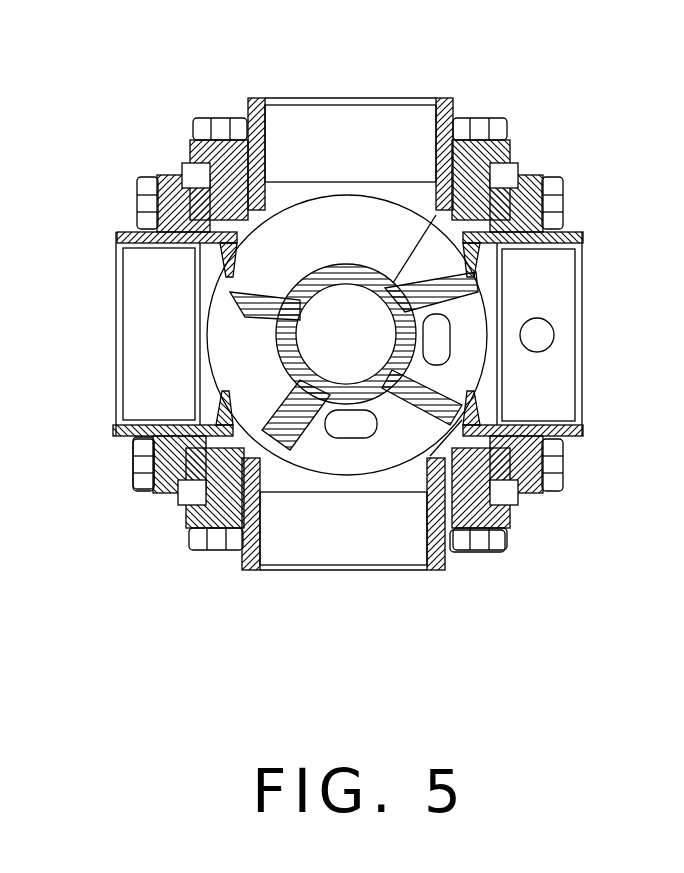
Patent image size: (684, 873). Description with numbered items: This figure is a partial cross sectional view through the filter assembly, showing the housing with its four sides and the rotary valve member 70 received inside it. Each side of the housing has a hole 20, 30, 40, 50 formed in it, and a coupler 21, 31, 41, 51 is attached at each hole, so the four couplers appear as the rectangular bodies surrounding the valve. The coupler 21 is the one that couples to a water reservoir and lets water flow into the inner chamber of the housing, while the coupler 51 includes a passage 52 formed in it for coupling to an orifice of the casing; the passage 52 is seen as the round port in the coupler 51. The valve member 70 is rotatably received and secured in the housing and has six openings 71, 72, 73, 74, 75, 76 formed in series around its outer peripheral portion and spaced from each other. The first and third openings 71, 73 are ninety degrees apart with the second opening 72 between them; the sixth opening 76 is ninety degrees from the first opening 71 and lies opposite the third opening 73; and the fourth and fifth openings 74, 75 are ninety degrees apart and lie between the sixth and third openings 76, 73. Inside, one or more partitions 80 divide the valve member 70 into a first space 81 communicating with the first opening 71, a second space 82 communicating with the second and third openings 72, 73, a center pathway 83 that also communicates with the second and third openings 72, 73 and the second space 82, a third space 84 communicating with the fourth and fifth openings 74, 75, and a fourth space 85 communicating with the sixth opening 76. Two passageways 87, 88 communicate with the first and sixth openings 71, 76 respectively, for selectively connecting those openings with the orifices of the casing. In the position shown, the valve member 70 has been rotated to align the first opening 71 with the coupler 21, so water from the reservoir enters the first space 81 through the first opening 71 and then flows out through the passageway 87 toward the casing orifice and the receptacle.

The hole 20 is at (208, 543).
The coupler 21 is at (318, 570).
The hole 30 is at (223, 258).
The coupler 31 is at (118, 262).
The hole 40 is at (252, 190).
The coupler 41 is at (310, 115).
The hole 50 is at (470, 252).
The coupler 51 is at (570, 268).
The passage 52 is at (548, 332).
The valve member 70 is at (490, 470).
The first opening 71 is at (397, 437).
The second opening 72 is at (240, 410).
The third opening 73 is at (258, 378).
The fourth opening 74 is at (250, 228).
The fifth opening 75 is at (490, 197).
The sixth opening 76 is at (472, 372).
The partition 80 is at (393, 287).
The first space 81 is at (477, 552).
The second space 82 is at (260, 380).
The center pathway 83 is at (318, 330).
The third space 84 is at (348, 228).
The fourth space 85 is at (462, 420).
The passageway 87 is at (340, 435).
The passageway 88 is at (443, 330).